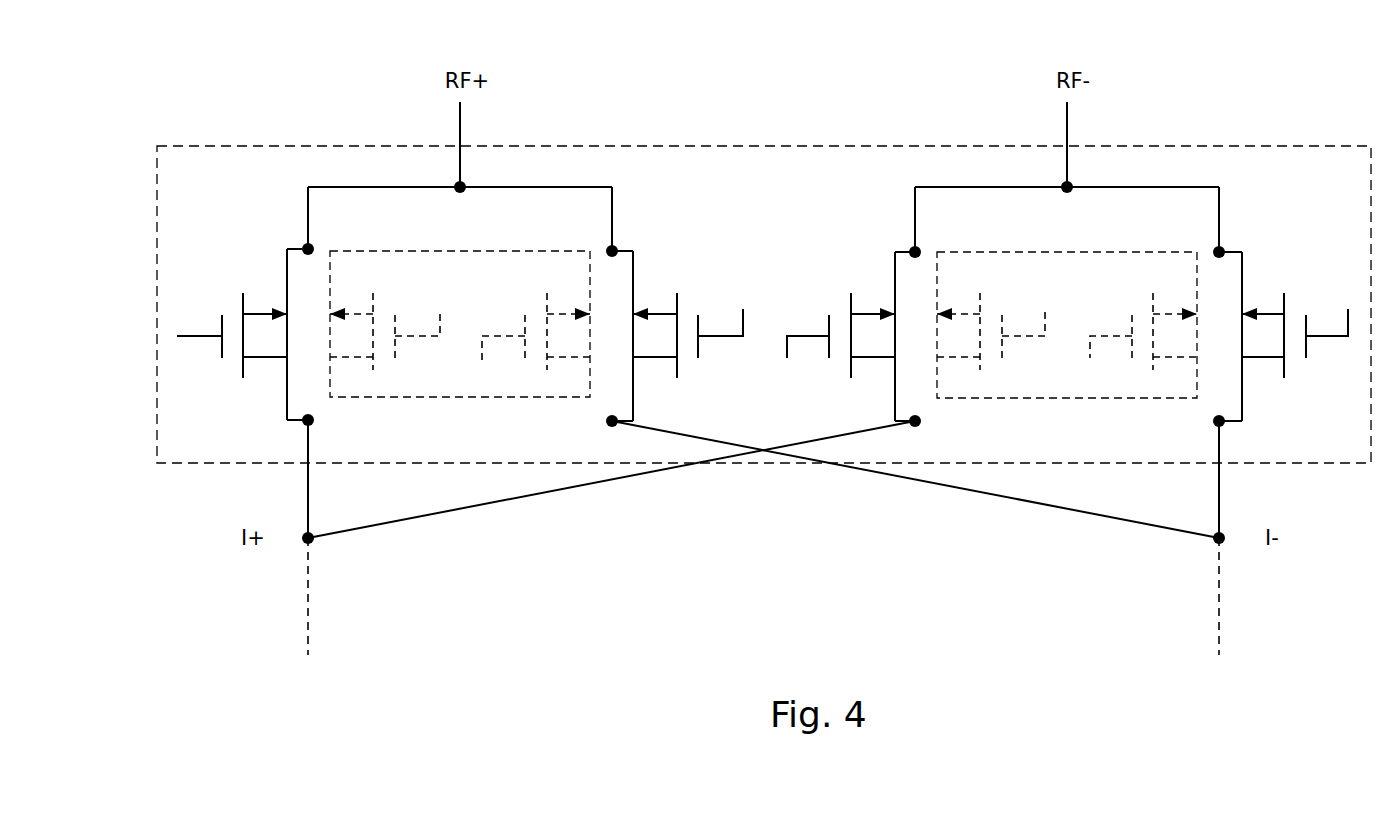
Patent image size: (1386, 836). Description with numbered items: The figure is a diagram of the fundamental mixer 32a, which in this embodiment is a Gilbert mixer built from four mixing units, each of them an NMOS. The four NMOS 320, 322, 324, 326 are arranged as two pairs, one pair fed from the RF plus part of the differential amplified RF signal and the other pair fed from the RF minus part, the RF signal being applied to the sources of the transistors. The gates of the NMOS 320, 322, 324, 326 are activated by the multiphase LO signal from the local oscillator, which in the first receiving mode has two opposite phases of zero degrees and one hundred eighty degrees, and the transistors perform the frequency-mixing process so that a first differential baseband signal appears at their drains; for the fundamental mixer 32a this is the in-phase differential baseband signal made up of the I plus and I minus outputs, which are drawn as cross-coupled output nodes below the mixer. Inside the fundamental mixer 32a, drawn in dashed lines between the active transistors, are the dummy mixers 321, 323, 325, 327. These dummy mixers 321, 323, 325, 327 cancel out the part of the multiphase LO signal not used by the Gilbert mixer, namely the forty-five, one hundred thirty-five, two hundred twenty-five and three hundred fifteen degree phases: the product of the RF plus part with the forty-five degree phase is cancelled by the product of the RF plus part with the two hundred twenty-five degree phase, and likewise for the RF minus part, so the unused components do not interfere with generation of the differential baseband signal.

The fundamental mixer 32a is at (155, 202).
The NMOS 320 is at (265, 265).
The dummy mixer 321 is at (342, 383).
The NMOS 322 is at (653, 265).
The dummy mixer 323 is at (527, 383).
The NMOS 324 is at (872, 266).
The dummy mixer 325 is at (960, 383).
The NMOS 326 is at (1263, 269).
The dummy mixer 327 is at (1133, 383).